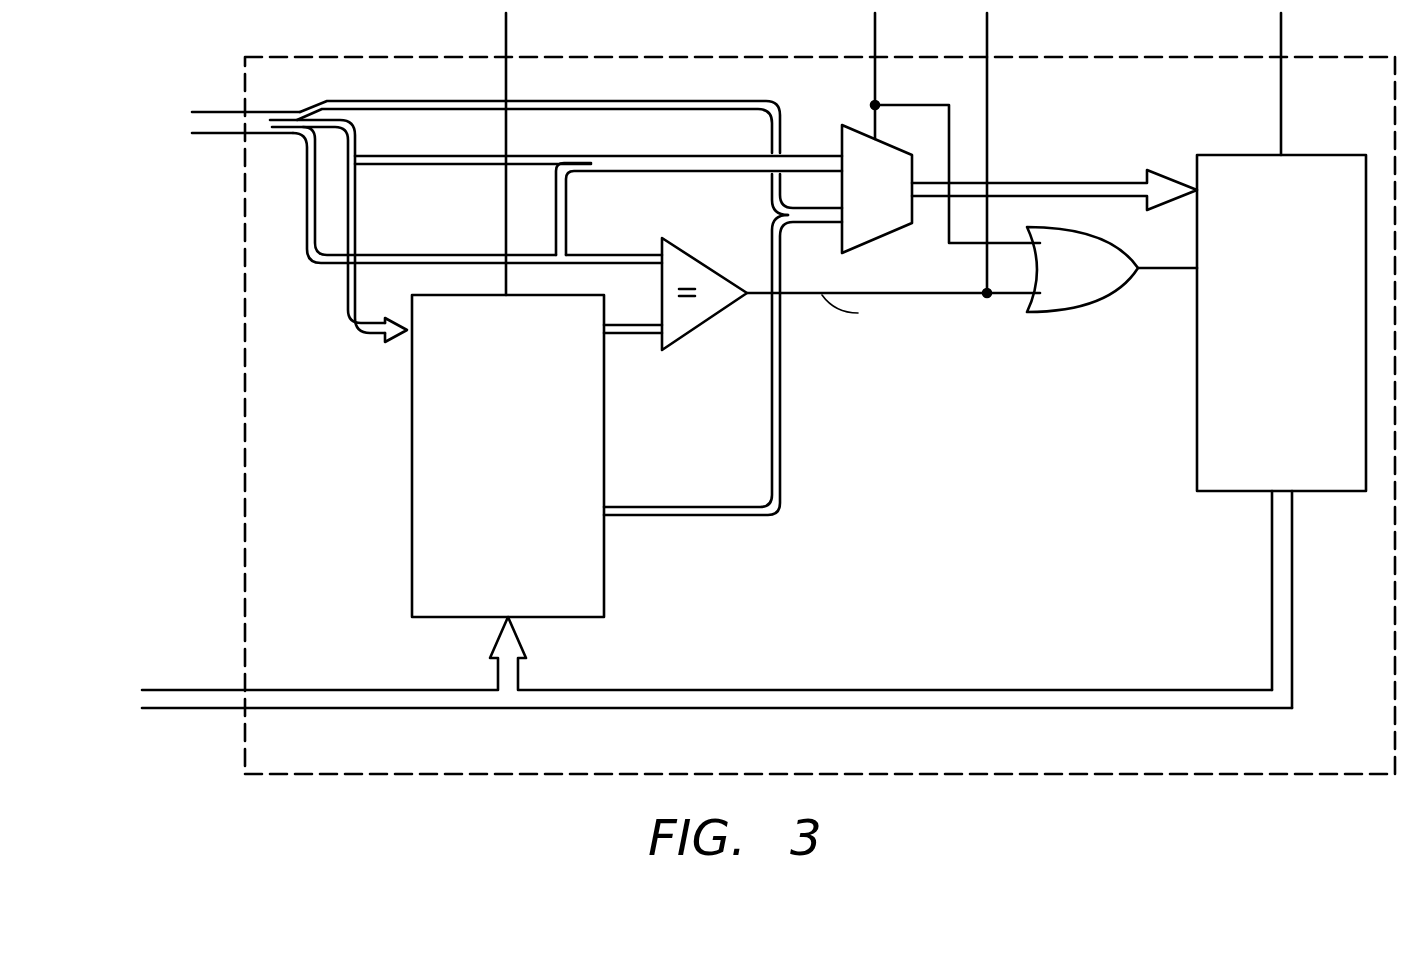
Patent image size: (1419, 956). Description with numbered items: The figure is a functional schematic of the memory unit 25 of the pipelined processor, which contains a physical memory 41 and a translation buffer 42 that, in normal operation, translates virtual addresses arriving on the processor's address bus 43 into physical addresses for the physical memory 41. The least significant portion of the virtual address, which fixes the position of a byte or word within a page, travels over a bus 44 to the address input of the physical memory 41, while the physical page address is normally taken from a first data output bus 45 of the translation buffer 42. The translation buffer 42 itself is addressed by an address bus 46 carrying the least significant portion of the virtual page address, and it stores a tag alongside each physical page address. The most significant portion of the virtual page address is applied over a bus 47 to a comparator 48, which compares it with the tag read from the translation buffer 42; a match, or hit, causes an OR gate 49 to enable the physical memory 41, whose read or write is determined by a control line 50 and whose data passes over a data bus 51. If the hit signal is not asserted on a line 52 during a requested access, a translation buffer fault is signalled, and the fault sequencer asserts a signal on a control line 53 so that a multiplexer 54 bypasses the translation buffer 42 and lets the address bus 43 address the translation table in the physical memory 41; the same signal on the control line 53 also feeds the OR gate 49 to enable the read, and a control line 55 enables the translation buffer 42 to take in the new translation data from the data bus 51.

The memory unit 25 is at (330, 773).
The physical memory 41 is at (1245, 491).
The translation buffer 42 is at (604, 575).
The address bus 43 is at (217, 112).
The bus 44 is at (538, 100).
The first data output bus 45 is at (635, 507).
The address bus 46 is at (348, 293).
The bus 47 is at (375, 257).
The comparator 48 is at (678, 340).
The OR gate 49 is at (1095, 305).
The control line 50 is at (1281, 30).
The data bus 51 is at (185, 690).
The line 52 is at (987, 30).
The control line 53 is at (875, 30).
The multiplexer 54 is at (860, 250).
The control line 55 is at (506, 28).